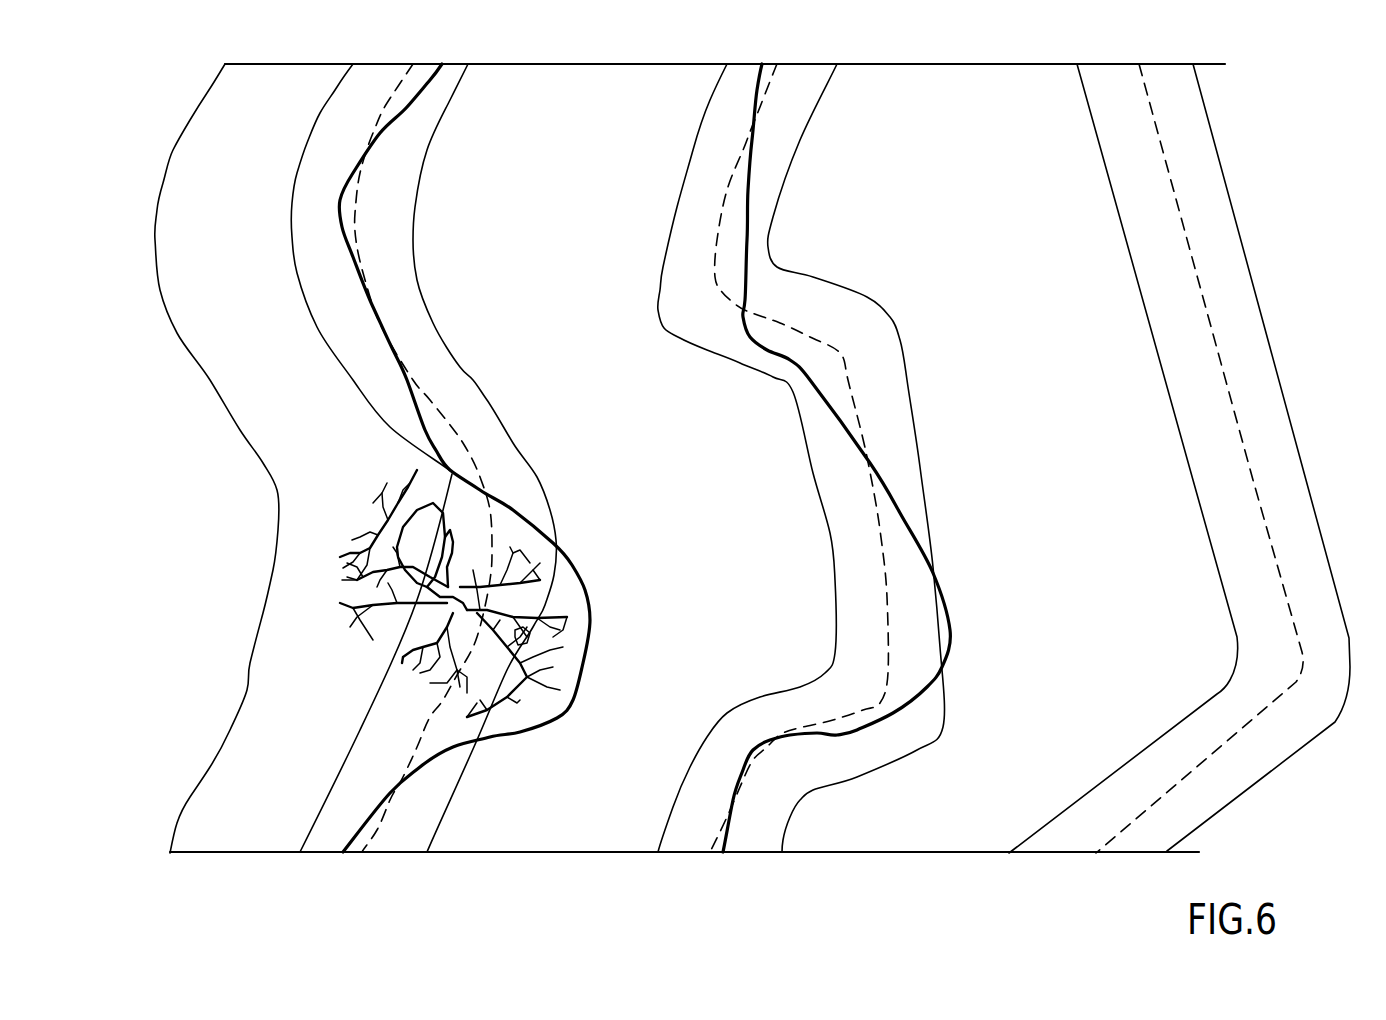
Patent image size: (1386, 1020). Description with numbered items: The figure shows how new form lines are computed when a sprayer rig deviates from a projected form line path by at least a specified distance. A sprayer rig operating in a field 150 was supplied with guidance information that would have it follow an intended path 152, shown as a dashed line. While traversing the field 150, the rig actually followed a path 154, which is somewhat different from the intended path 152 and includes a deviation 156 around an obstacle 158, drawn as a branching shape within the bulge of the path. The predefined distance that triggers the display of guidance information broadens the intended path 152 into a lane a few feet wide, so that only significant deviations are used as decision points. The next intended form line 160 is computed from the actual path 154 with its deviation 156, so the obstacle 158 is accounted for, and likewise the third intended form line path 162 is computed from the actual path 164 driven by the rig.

The field 150 is at (266, 457).
The intended path 152 is at (424, 737).
The path 154 is at (507, 737).
The deviation 156 is at (587, 668).
The obstacle 158 is at (352, 614).
The next intended form line 160 is at (715, 264).
The third intended form line path 162 is at (1244, 738).
The actual path 164 is at (943, 602).